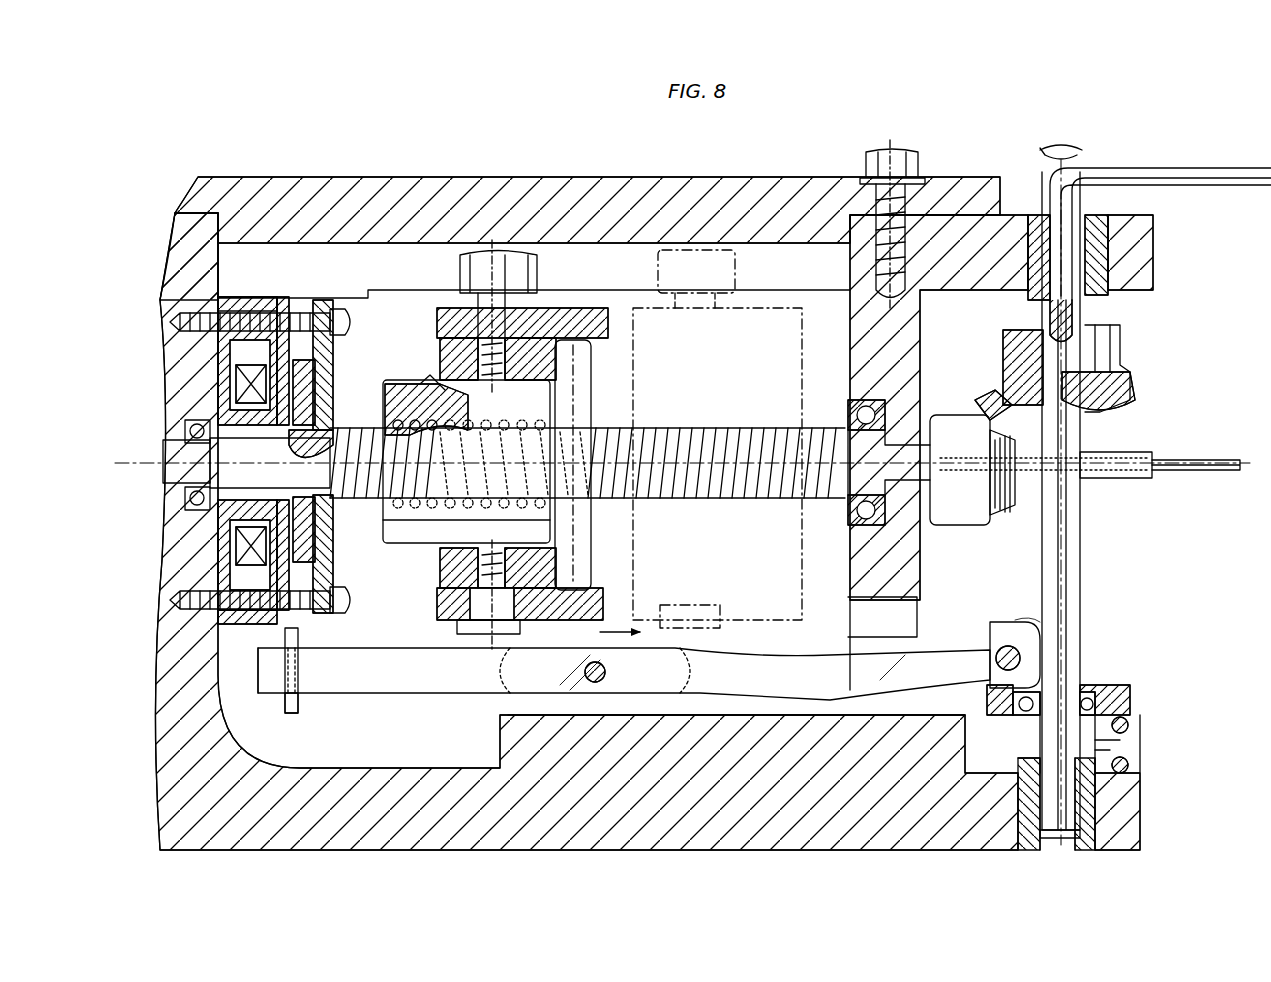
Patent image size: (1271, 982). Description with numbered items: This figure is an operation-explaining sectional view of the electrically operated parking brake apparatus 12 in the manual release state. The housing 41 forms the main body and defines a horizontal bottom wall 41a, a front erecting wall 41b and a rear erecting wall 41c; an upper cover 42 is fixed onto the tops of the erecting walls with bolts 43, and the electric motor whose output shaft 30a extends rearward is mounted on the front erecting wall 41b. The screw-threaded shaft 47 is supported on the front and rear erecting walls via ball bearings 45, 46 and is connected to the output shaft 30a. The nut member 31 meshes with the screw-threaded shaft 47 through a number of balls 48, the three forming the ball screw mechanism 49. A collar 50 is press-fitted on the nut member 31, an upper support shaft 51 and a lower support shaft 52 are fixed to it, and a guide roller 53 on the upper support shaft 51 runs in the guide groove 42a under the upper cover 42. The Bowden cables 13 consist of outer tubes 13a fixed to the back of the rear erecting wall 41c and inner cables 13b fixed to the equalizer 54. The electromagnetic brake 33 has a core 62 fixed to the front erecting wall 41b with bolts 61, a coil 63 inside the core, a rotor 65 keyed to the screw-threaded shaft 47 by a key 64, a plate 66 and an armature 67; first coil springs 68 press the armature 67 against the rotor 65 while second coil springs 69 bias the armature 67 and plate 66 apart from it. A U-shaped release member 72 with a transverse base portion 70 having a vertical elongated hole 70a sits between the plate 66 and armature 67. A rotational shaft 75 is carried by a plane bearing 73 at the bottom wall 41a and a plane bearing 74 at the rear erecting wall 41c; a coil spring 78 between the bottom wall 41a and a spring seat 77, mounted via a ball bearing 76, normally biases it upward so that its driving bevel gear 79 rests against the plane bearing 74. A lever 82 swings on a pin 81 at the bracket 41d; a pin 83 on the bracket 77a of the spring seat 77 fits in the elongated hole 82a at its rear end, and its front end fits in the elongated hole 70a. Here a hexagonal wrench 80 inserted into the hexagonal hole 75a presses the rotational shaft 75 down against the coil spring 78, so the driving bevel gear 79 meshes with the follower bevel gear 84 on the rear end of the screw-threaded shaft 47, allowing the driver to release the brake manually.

The electrically operated parking brake apparatus 12 is at (590, 172).
The Bowden cable 13 is at (1235, 543).
The outer tube 13a is at (1130, 484).
The inner cable 13b is at (1222, 484).
The output shaft 30a is at (172, 460).
The nut member 31 is at (395, 540).
The electromagnetic brake 33 is at (313, 287).
The housing 41 is at (180, 752).
The bottom wall 41a is at (455, 792).
The front erecting wall 41b is at (206, 222).
The rear erecting wall 41c is at (852, 366).
The bracket 41d is at (686, 708).
The upper cover 42 is at (372, 176).
The guide groove 42a is at (762, 292).
The bolt 43 is at (868, 166).
The ball bearing 45 is at (205, 430).
The ball bearing 46 is at (852, 508).
The screw-threaded shaft 47 is at (690, 482).
The ball 48 is at (424, 382).
The ball screw mechanism 49 is at (413, 568).
The collar 50 is at (450, 552).
The upper support shaft 51 is at (514, 318).
The lower support shaft 52 is at (475, 636).
The guide roller 53 is at (462, 270).
The equalizer 54 is at (600, 610).
The bolt 61 is at (352, 322).
The core 62 is at (247, 300).
The coil 63 is at (250, 385).
The key 64 is at (330, 408).
The rotor 65 is at (330, 522).
The plate 66 is at (333, 412).
The armature 67 is at (283, 300).
The first coil spring 68 is at (228, 322).
The second coil spring 69 is at (322, 300).
The base portion 70 is at (290, 706).
The elongated hole 70a is at (300, 690).
The release member 72 is at (300, 640).
The plane bearing 73 is at (1105, 828).
The plane bearing 74 is at (1038, 218).
The rotational shaft 75 is at (1085, 606).
The hexagonal hole 75a is at (1050, 310).
The ball bearing 76 is at (1092, 690).
The spring seat 77 is at (1130, 680).
The bracket 77a is at (1022, 620).
The coil spring 78 is at (1130, 720).
The driving bevel gear 79 is at (1120, 408).
The hexagonal wrench 80 is at (1208, 190).
The pin 81 is at (584, 672).
The lever 82 is at (765, 648).
The elongated hole 82a is at (1000, 658).
The pin 83 is at (1003, 646).
The follower bevel gear 84 is at (995, 395).